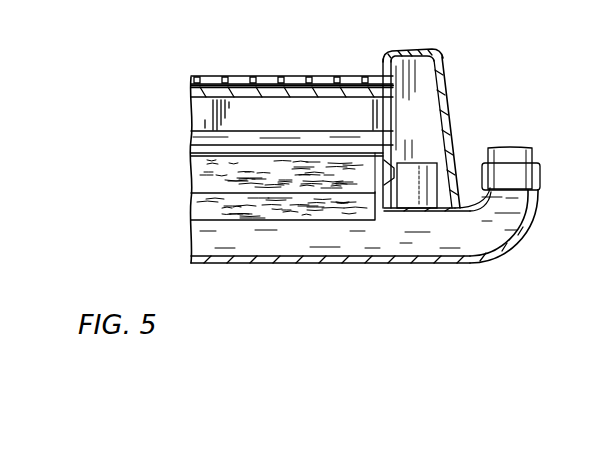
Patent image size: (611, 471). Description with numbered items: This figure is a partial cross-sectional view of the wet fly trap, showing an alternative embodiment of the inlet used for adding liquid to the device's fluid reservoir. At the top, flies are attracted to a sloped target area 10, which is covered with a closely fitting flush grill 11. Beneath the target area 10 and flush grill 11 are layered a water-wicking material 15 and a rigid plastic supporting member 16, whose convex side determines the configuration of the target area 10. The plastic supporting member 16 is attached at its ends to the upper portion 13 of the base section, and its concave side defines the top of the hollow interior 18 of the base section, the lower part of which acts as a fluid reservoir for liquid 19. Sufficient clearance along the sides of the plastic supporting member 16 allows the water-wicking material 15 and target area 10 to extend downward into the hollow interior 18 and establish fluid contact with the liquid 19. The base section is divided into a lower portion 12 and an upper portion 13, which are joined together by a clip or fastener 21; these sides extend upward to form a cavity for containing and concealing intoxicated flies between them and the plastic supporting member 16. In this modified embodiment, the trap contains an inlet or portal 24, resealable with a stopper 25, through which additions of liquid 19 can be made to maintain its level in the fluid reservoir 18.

The target area 10 is at (257, 83).
The flush grill 11 is at (207, 78).
The lower portion 12 is at (446, 186).
The upper portion 13 is at (442, 64).
The water-wicking material 15 is at (293, 89).
The plastic supporting member 16 is at (348, 94).
The hollow interior 18 is at (264, 180).
The liquid 19 is at (341, 210).
The clip or fastener 21 is at (455, 150).
The inlet or portal 24 is at (539, 193).
The stopper 25 is at (512, 160).